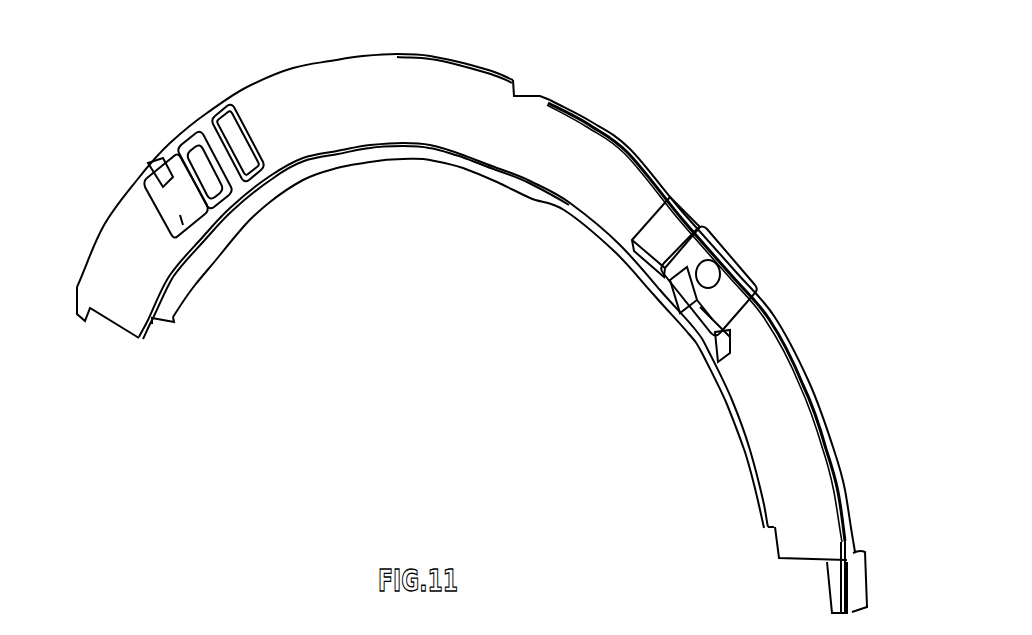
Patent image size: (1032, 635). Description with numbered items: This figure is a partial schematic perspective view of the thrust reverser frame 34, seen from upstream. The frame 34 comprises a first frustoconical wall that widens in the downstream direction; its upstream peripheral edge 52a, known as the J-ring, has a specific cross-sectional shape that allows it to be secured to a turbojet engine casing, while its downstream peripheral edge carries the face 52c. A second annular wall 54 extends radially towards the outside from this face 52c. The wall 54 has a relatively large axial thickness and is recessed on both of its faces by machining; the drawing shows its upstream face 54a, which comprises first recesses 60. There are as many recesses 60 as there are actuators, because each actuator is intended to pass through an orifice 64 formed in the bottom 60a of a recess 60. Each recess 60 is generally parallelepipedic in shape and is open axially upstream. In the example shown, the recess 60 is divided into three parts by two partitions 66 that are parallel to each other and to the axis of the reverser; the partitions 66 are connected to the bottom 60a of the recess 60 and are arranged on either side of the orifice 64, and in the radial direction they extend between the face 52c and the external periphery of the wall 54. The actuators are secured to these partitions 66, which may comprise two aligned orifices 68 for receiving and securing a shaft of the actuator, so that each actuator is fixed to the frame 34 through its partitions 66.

The frame 34 is at (838, 247).
The upstream peripheral edge 52a is at (418, 162).
The face 52c is at (697, 300).
The second annular wall 54 is at (593, 147).
The upstream face 54a is at (454, 70).
The first recesses 60 is at (256, 170).
The bottom 60a is at (733, 313).
The orifice 64 is at (202, 188).
The partitions 66 is at (170, 182).
The orifices 68 is at (193, 188).